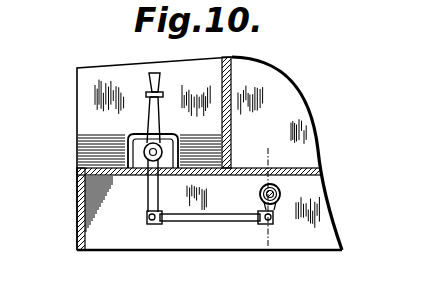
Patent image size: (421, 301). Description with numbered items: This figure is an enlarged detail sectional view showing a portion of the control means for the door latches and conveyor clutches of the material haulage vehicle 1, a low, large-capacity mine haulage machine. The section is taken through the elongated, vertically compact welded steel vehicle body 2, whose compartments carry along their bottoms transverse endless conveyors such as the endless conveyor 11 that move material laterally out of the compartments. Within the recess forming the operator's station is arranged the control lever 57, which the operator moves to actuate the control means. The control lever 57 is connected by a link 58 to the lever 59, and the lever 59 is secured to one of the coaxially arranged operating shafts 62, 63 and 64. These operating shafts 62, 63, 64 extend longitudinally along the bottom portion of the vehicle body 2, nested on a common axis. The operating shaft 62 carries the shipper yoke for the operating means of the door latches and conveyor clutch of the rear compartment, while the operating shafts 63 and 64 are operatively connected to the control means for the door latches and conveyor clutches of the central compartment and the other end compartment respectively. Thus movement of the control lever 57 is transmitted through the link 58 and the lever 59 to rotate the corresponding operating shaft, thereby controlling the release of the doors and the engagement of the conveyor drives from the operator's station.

The material haulage vehicle 1 is at (77, 205).
The vehicle body 2 is at (288, 89).
The endless conveyor 11 is at (285, 155).
The control lever 57 is at (150, 112).
The link 58 is at (220, 218).
The lever 59 is at (282, 208).
The operating shaft 62 is at (280, 199).
The operating shaft 63 is at (280, 192).
The operating shaft 64 is at (278, 186).